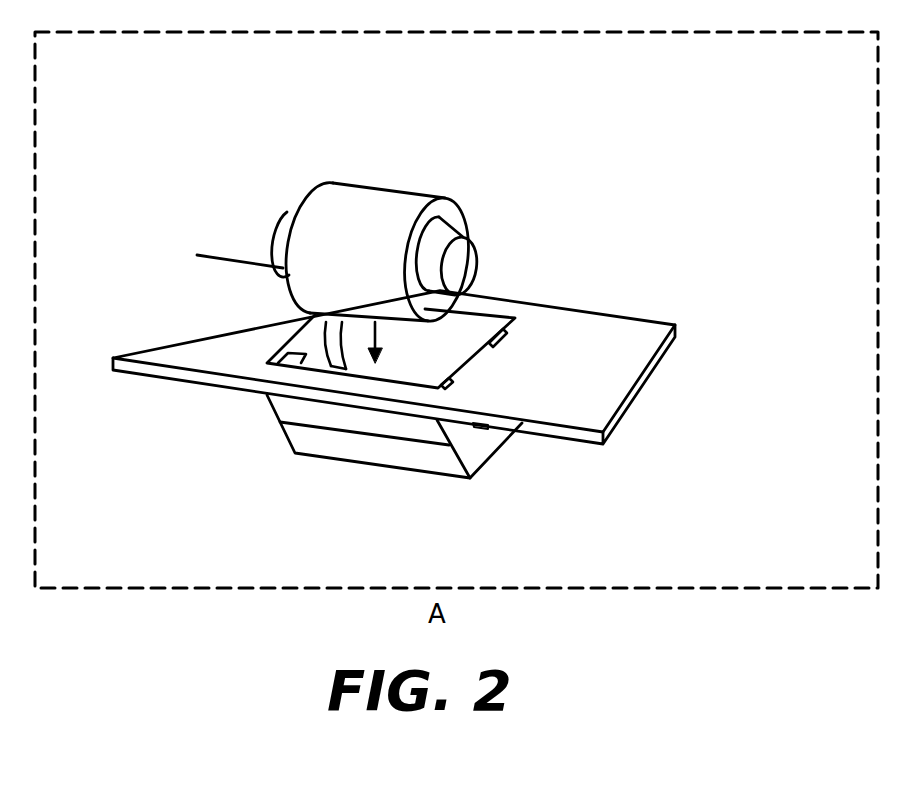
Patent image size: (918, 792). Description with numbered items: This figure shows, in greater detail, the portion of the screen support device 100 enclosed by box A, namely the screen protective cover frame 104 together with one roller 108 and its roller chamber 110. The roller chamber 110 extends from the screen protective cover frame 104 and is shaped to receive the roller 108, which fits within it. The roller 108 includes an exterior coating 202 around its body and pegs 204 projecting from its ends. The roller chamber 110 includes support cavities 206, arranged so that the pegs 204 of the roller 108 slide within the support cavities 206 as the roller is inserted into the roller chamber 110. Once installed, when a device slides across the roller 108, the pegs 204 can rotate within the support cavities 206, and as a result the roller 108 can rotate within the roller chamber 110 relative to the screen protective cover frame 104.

The screen support device 100 is at (690, 139).
The screen protective cover frame 104 is at (603, 345).
The roller 108 is at (359, 246).
The roller chamber 110 is at (372, 448).
The exterior coating 202 is at (398, 228).
The pegs 204 is at (278, 233).
The support cavities 206 is at (318, 350).